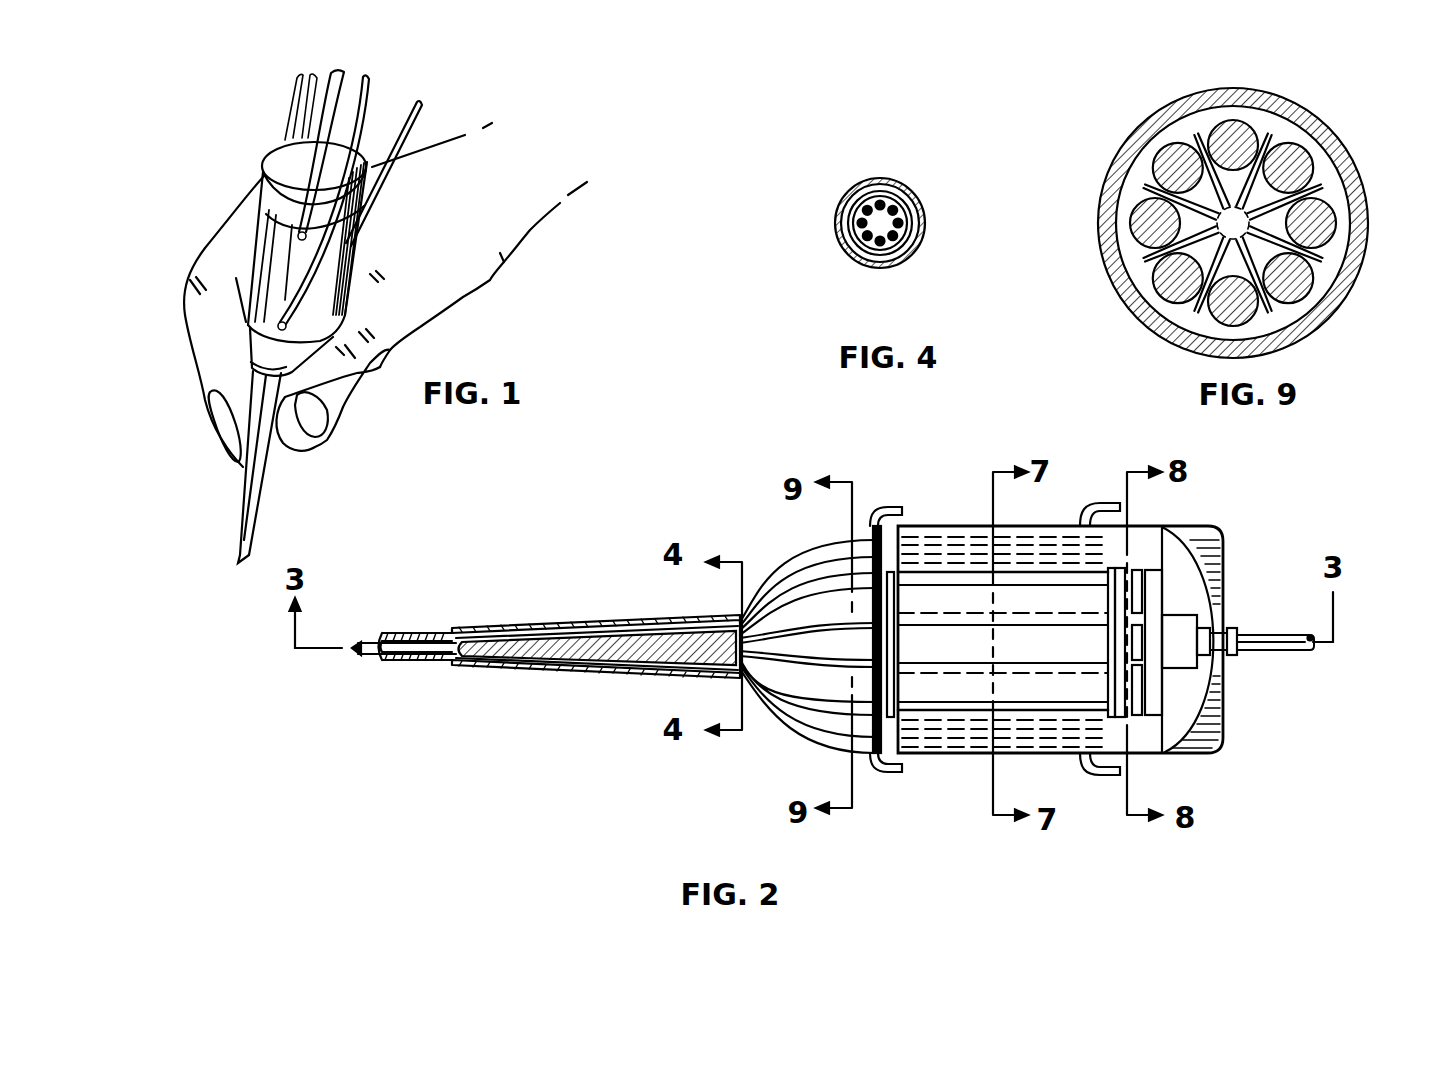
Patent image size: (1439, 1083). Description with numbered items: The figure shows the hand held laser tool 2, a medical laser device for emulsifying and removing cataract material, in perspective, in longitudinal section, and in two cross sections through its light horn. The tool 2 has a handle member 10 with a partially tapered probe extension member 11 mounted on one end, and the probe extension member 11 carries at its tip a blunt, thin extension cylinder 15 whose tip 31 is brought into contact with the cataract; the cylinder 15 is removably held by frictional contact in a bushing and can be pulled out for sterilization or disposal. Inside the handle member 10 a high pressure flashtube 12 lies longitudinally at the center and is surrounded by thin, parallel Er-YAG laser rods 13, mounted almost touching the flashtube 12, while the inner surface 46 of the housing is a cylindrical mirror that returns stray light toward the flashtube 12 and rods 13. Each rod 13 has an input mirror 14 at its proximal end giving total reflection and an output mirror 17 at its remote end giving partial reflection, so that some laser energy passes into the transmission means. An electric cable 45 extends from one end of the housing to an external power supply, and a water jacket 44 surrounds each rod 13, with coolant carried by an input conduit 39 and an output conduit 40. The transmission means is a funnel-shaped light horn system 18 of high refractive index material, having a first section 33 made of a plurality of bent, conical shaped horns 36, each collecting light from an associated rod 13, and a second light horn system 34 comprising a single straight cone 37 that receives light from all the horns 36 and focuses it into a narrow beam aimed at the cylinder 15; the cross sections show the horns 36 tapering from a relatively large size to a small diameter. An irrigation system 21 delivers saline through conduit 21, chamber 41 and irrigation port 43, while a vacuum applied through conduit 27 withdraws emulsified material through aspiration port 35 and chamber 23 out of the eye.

In FIG. 1, the hand held laser tool 2 is at (248, 152).
In FIG. 2, the hand held laser tool 2 is at (726, 510).
In FIG. 1, the handle member 10 is at (360, 236).
In FIG. 2, the handle member 10 is at (1214, 723).
In FIG. 1, the probe extension member 11 is at (262, 480).
In FIG. 2, the probe extension member 11 is at (576, 668).
In FIG. 2, the flashtube 12 is at (948, 647).
In FIG. 2, the laser rods 13 is at (930, 580).
In FIG. 2, the input mirror 14 is at (1137, 565).
In FIG. 1, the extension cylinder 15 is at (236, 556).
In FIG. 2, the extension cylinder 15 is at (438, 652).
In FIG. 2, the output mirror 17 is at (900, 580).
In FIG. 2, the light horn system 18 is at (608, 742).
In FIG. 2, the irrigation system 21 is at (782, 722).
In FIG. 2, the chamber 23 is at (613, 618).
In FIG. 2, the conduit 27 is at (877, 507).
In FIG. 2, the tip 31 is at (356, 628).
In FIG. 4, the light horn section 33 is at (926, 216).
In FIG. 9, the light horn section 33 is at (1338, 150).
In FIG. 2, the second light horn system 34 is at (506, 630).
In FIG. 2, the aspiration port 35 is at (389, 634).
In FIG. 4, the conical shaped horns 36 is at (900, 246).
In FIG. 9, the conical shaped horns 36 is at (1312, 285).
In FIG. 2, the straight cone 37 is at (627, 664).
In FIG. 2, the input conduit 39 is at (1100, 800).
In FIG. 2, the output conduit 40 is at (1103, 503).
In FIG. 2, the chamber 41 is at (503, 664).
In FIG. 2, the irrigation port 43 is at (392, 662).
In FIG. 2, the water jacket 44 is at (967, 553).
In FIG. 1, the electric cable 45 is at (350, 74).
In FIG. 2, the electric cable 45 is at (1270, 652).
In FIG. 2, the inner surface 46 is at (1045, 545).